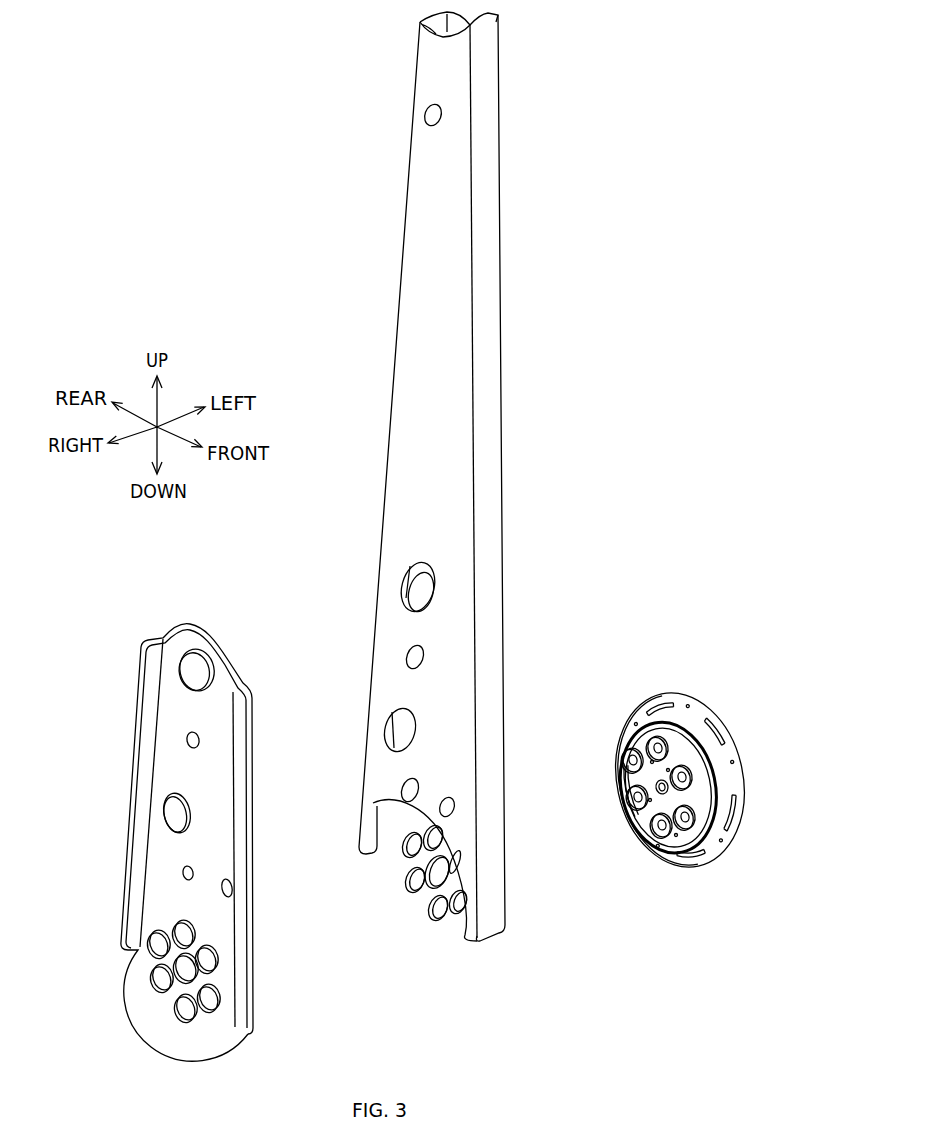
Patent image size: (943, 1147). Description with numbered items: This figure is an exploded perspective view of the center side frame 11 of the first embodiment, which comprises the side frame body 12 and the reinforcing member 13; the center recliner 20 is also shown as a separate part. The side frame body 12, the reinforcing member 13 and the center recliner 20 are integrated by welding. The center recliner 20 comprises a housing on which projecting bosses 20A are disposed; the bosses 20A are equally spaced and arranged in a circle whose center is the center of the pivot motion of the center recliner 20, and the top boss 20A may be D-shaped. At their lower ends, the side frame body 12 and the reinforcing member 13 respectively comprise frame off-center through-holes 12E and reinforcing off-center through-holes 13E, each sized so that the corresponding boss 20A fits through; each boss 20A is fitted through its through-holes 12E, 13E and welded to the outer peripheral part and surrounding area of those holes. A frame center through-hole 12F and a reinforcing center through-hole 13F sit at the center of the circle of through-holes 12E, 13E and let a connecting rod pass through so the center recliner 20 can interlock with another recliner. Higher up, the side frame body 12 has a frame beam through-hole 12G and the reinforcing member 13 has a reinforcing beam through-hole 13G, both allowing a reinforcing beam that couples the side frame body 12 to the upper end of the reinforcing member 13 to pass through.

The center side frame 11 is at (313, 563).
The side frame body 12 is at (488, 256).
The frame off-center through-holes 12E is at (405, 850).
The frame center through-hole 12F is at (432, 885).
The frame beam through-hole 12G is at (404, 580).
The reinforcing member 13 is at (131, 751).
The reinforcing off-center through-holes 13E is at (150, 948).
The reinforcing center through-hole 13F is at (178, 972).
The reinforcing beam through-hole 13G is at (180, 670).
The center recliner 20 is at (708, 870).
The bosses 20A is at (648, 750).